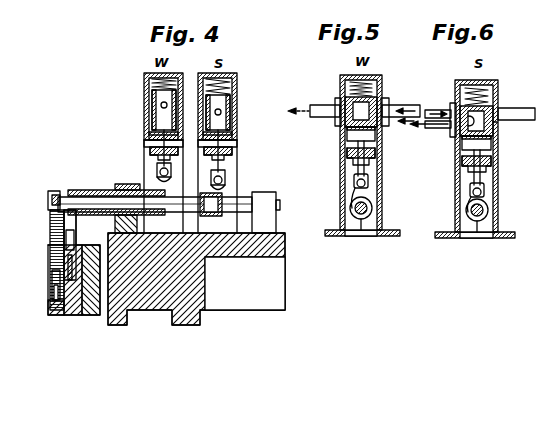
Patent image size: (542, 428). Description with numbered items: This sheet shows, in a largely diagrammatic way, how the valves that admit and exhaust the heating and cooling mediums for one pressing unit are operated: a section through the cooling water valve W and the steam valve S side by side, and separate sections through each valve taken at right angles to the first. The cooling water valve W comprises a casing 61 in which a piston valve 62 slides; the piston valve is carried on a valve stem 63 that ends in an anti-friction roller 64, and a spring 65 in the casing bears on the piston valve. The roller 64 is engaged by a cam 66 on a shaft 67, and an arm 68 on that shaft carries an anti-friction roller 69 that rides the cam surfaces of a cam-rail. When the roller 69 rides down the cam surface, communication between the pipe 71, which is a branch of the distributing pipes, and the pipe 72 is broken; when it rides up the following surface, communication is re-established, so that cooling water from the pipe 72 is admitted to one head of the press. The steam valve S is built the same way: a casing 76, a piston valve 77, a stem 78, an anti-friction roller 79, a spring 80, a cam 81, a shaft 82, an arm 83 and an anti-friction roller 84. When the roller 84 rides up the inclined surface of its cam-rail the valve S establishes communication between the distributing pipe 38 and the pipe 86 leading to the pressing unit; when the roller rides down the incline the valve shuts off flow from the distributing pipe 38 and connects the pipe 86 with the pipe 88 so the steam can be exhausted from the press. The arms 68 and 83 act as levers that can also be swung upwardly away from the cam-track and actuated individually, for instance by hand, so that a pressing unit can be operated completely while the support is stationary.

In FIG. 6, the distributing pipe 38 is at (516, 108).
In FIG. 4, the casing 61 is at (148, 76).
In FIG. 4, the piston valve 62 is at (152, 104).
In FIG. 5, the piston valve 62 is at (347, 133).
In FIG. 4, the valve stem 63 is at (149, 132).
In FIG. 5, the valve stem 63 is at (352, 162).
In FIG. 4, the anti-friction roller 64 is at (158, 170).
In FIG. 5, the anti-friction roller 64 is at (354, 182).
In FIG. 4, the spring 65 is at (150, 86).
In FIG. 5, the spring 65 is at (342, 80).
In FIG. 5, the cam 66 is at (351, 204).
In FIG. 4, the shaft 67 is at (90, 190).
In FIG. 5, the shaft 67 is at (361, 230).
In FIG. 4, the arm 68 is at (72, 192).
In FIG. 4, the anti-friction roller 69 is at (50, 222).
In FIG. 5, the pipe 71 is at (400, 105).
In FIG. 5, the pipe 72 is at (320, 105).
In FIG. 4, the casing 76 is at (232, 108).
In FIG. 6, the casing 76 is at (497, 128).
In FIG. 4, the piston valve 77 is at (232, 128).
In FIG. 6, the piston valve 77 is at (462, 146).
In FIG. 4, the stem 78 is at (220, 160).
In FIG. 6, the stem 78 is at (482, 156).
In FIG. 4, the anti-friction roller 79 is at (226, 182).
In FIG. 6, the anti-friction roller 79 is at (484, 188).
In FIG. 4, the spring 80 is at (232, 75).
In FIG. 6, the spring 80 is at (482, 82).
In FIG. 6, the cam 81 is at (467, 204).
In FIG. 4, the shaft 82 is at (142, 190).
In FIG. 6, the shaft 82 is at (477, 232).
In FIG. 4, the arm 83 is at (50, 250).
In FIG. 4, the anti-friction roller 84 is at (52, 297).
In FIG. 6, the pipe 86 is at (442, 108).
In FIG. 6, the pipe 88 is at (444, 128).